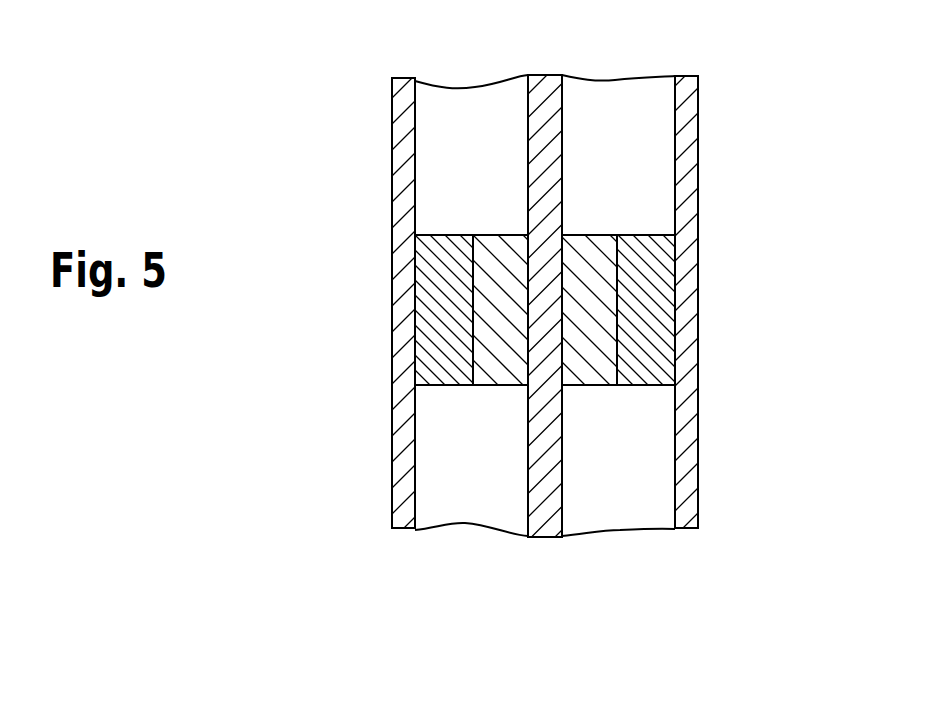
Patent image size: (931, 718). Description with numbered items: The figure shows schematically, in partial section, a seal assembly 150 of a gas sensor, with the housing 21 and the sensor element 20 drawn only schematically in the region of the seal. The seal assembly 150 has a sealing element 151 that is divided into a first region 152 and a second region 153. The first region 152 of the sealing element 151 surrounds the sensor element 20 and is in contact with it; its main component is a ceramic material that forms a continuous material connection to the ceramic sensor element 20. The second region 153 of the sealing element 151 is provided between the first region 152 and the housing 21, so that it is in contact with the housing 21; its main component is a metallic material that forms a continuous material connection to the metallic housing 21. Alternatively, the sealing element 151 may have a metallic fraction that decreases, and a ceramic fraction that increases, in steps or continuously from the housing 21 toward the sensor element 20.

The sensor element 20 is at (553, 99).
The housing 21 is at (407, 153).
The seal assembly 150 is at (463, 160).
The sealing element 151 is at (561, 299).
The first region 152 is at (507, 350).
The second region 153 is at (440, 313).